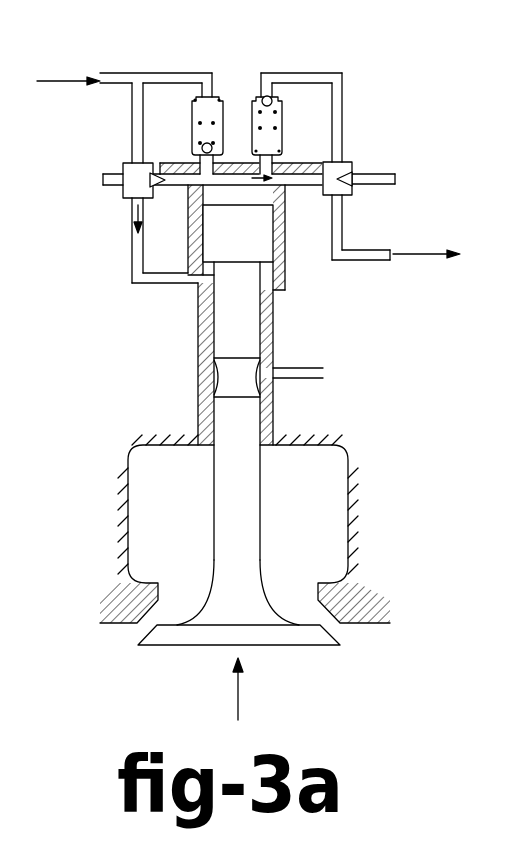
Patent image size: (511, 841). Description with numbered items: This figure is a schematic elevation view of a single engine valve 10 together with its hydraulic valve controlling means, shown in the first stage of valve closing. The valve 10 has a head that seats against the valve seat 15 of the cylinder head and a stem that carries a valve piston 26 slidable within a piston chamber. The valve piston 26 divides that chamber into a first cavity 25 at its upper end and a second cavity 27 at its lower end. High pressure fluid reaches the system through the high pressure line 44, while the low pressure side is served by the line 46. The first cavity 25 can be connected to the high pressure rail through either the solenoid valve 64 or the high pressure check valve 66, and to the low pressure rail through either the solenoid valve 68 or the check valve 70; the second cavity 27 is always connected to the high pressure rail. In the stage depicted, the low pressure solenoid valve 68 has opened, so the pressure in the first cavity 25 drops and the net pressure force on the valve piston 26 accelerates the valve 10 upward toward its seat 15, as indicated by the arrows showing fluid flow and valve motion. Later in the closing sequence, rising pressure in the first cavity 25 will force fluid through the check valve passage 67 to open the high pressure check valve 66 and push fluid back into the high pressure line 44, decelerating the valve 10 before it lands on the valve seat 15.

The high pressure line 44 is at (118, 60).
The high pressure check valve 66 is at (224, 112).
The check valve 70 is at (250, 114).
The check valve passage 67 is at (190, 165).
The solenoid valve 64 is at (103, 179).
The first cavity 25 is at (188, 186).
The second cavity 27 is at (198, 287).
The valve piston 26 is at (252, 244).
The solenoid valve 68 is at (396, 178).
The line 46 is at (374, 260).
The valve 10 is at (284, 525).
The valve seat 15 is at (148, 617).